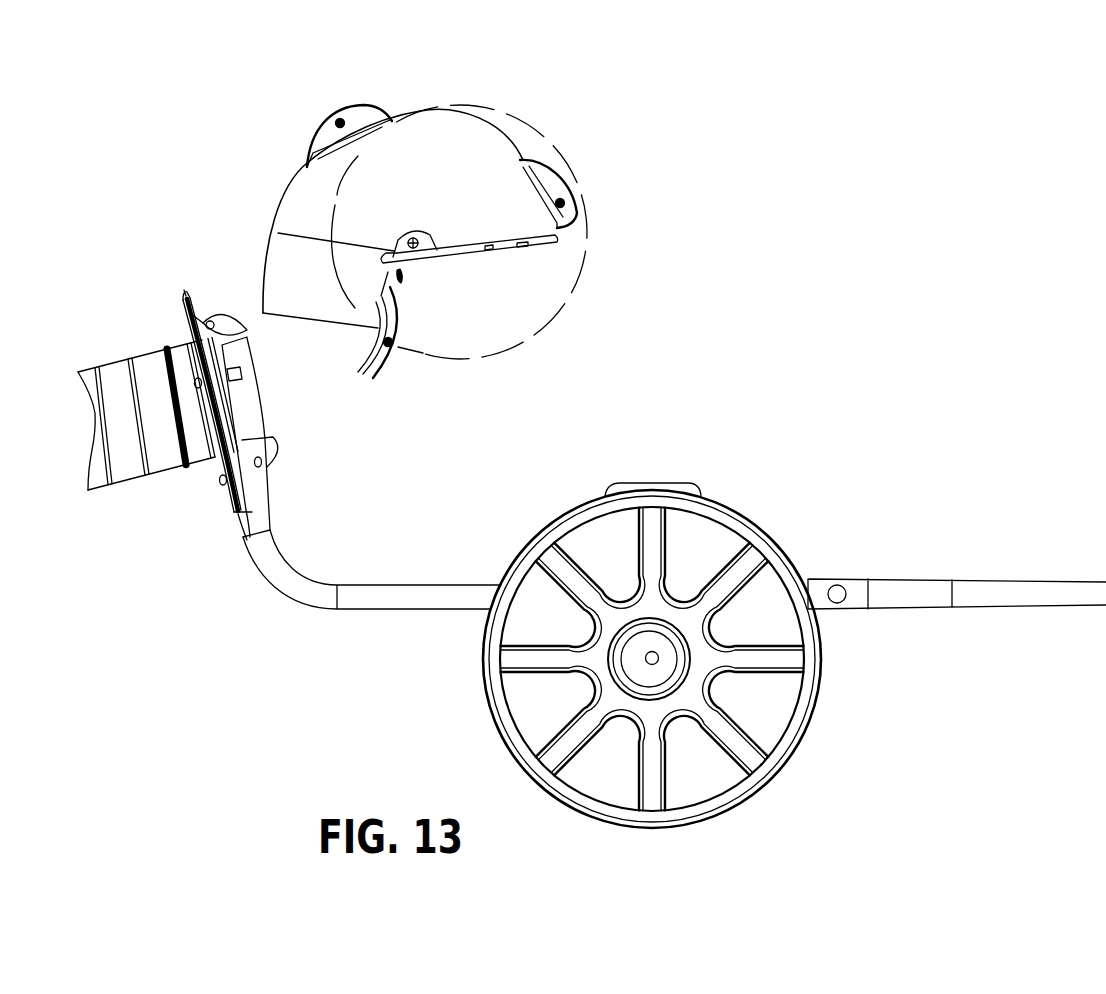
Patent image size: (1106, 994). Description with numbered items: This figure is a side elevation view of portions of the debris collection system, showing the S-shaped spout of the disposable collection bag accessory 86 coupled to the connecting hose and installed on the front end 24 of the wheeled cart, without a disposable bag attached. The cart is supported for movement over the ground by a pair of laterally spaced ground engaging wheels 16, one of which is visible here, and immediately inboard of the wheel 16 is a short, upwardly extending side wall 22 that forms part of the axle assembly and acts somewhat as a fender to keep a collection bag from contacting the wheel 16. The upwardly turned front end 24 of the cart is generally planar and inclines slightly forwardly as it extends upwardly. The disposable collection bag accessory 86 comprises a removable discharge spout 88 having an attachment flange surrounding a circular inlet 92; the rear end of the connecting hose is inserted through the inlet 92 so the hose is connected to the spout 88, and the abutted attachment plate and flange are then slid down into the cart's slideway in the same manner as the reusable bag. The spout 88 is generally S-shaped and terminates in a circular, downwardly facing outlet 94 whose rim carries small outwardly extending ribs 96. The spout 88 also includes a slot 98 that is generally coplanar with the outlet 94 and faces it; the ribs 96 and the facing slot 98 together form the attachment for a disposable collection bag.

The ground engaging wheel 16 is at (732, 507).
The side wall 22 is at (668, 481).
The front end 24 is at (217, 467).
The disposable collection bag accessory 86 is at (498, 94).
The discharge spout 88 is at (422, 158).
The circular inlet 92 is at (237, 407).
The outlet 94 is at (470, 255).
The ribs 96 is at (525, 247).
The slot 98 is at (400, 272).